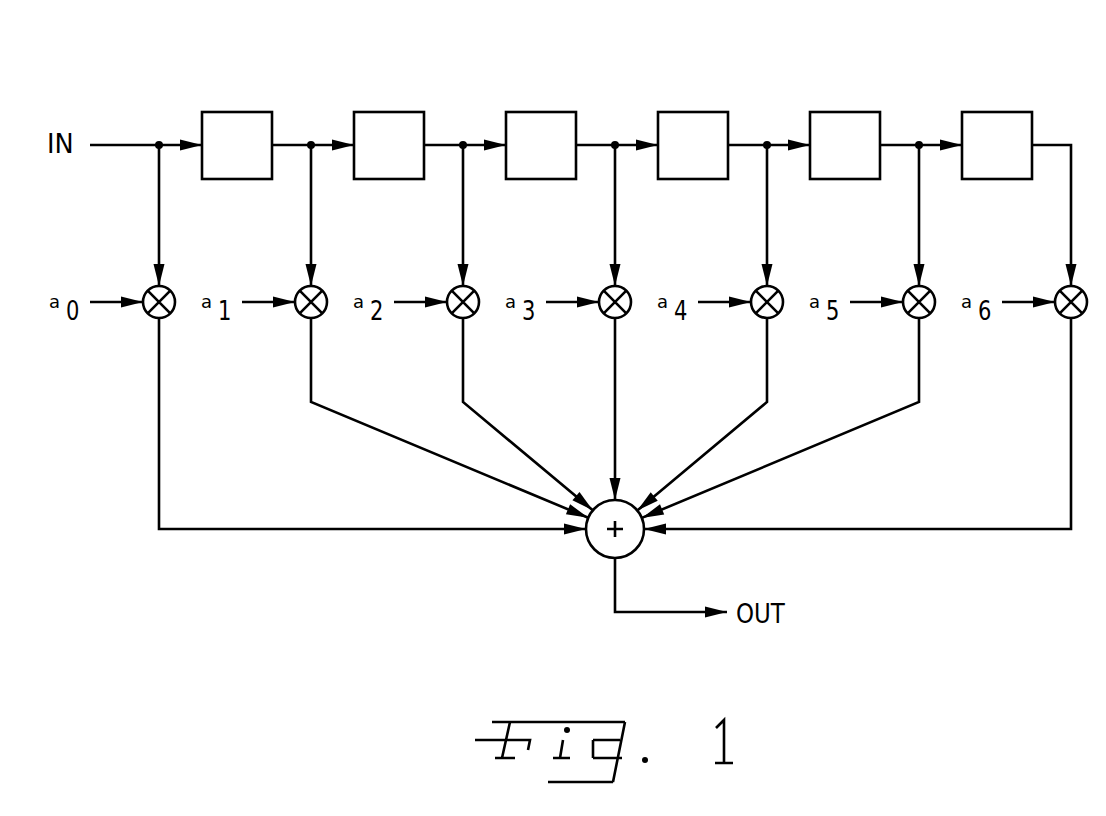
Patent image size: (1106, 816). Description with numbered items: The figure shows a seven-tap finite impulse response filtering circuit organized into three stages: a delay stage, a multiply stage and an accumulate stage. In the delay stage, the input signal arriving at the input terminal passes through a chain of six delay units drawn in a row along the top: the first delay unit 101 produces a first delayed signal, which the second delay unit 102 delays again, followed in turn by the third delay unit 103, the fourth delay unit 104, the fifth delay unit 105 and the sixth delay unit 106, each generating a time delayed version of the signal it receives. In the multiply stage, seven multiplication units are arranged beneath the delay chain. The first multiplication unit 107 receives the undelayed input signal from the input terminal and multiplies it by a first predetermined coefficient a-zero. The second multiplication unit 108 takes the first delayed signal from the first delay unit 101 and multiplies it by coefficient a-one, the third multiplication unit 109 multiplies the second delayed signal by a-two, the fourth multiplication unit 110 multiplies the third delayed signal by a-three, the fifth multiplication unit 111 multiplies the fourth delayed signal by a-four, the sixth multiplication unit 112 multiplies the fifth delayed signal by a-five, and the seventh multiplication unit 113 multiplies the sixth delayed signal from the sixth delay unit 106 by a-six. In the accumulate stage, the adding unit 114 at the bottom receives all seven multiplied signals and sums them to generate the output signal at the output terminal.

The first delay unit 101 is at (221, 111).
The second delay unit 102 is at (373, 111).
The third delay unit 103 is at (525, 111).
The fourth delay unit 104 is at (677, 111).
The fifth delay unit 105 is at (828, 111).
The sixth delay unit 106 is at (981, 111).
The first multiplication unit 107 is at (143, 315).
The second multiplication unit 108 is at (295, 315).
The third multiplication unit 109 is at (447, 315).
The fourth multiplication unit 110 is at (599, 315).
The fifth multiplication unit 111 is at (751, 315).
The sixth multiplication unit 112 is at (903, 315).
The seventh multiplication unit 113 is at (1055, 315).
The adding unit 114 is at (588, 552).